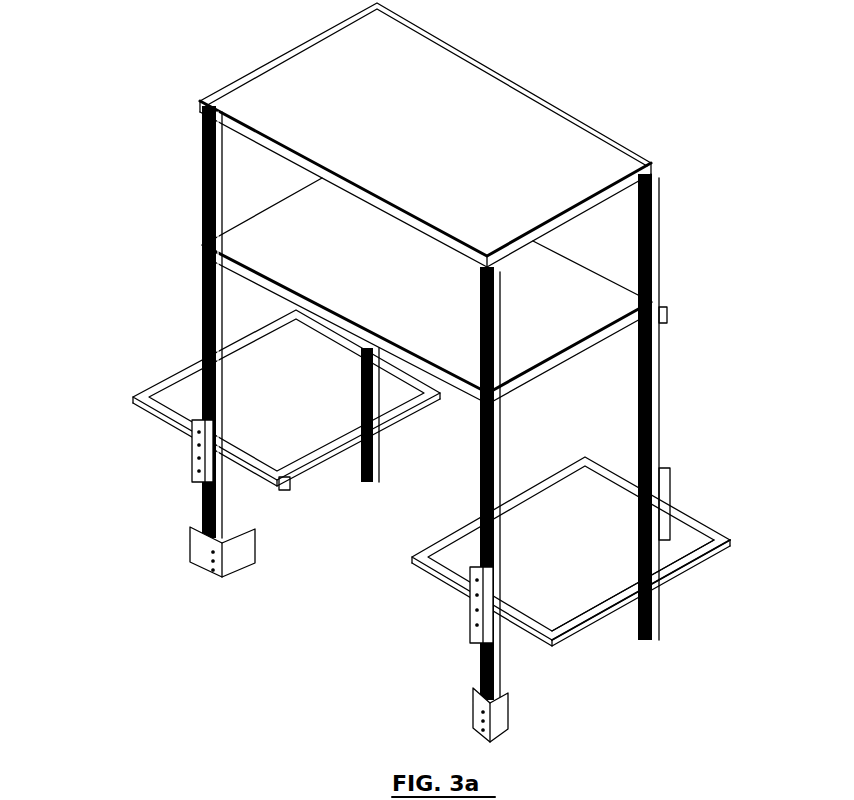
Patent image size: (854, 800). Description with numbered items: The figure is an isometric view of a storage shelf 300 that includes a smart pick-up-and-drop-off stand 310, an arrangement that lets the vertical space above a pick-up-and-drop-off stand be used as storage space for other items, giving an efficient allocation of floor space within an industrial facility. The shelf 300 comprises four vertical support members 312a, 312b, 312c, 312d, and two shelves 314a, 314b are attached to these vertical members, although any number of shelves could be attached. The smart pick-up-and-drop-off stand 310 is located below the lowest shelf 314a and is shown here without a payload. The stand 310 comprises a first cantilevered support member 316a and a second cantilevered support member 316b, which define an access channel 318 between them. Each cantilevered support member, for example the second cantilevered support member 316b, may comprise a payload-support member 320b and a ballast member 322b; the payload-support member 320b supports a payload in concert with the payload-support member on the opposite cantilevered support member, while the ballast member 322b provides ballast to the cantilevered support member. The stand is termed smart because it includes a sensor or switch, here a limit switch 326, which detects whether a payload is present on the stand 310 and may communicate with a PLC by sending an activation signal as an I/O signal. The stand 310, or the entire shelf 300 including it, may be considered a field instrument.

The storage shelf 300 is at (165, 100).
The smart pick-up-and-drop-off stand 310 is at (165, 360).
The vertical support member 312a is at (205, 282).
The vertical support member 312b is at (503, 575).
The vertical support member 312c is at (360, 400).
The vertical support member 312d is at (655, 413).
The shelf 314a is at (408, 282).
The shelf 314b is at (448, 148).
The first cantilevered support member 316a is at (177, 432).
The second cantilevered support member 316b is at (447, 583).
The access channel 318 is at (370, 508).
The payload-support member 320b is at (457, 527).
The ballast member 322b is at (598, 628).
The limit switch 326 is at (280, 490).